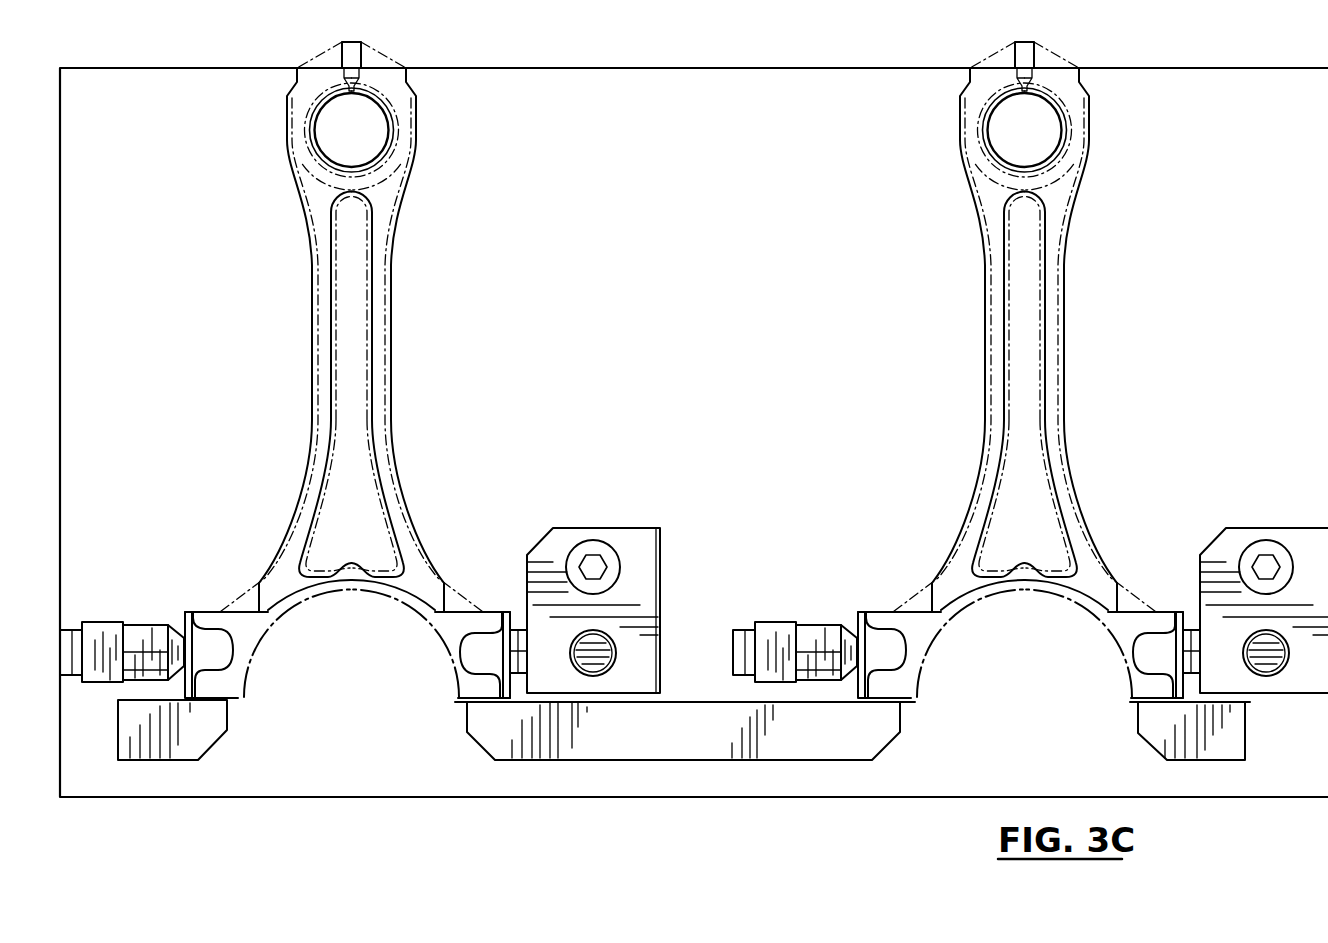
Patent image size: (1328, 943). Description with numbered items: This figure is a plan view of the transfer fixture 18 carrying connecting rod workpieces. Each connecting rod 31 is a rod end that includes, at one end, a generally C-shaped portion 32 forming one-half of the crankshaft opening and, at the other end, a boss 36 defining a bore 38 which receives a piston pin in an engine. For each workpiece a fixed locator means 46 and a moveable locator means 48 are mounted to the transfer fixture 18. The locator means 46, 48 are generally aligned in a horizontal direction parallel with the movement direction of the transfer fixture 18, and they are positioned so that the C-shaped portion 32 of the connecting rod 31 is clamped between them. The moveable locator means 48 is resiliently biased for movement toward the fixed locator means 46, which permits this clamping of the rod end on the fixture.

The transfer fixture 18 is at (1232, 90).
The connecting rod 31 is at (1029, 369).
The C-shaped portion 32 is at (313, 611).
The boss 36 is at (1050, 149).
The bore 38 is at (1072, 123).
The fixed locator means 46 is at (110, 612).
The moveable locator means 48 is at (670, 617).